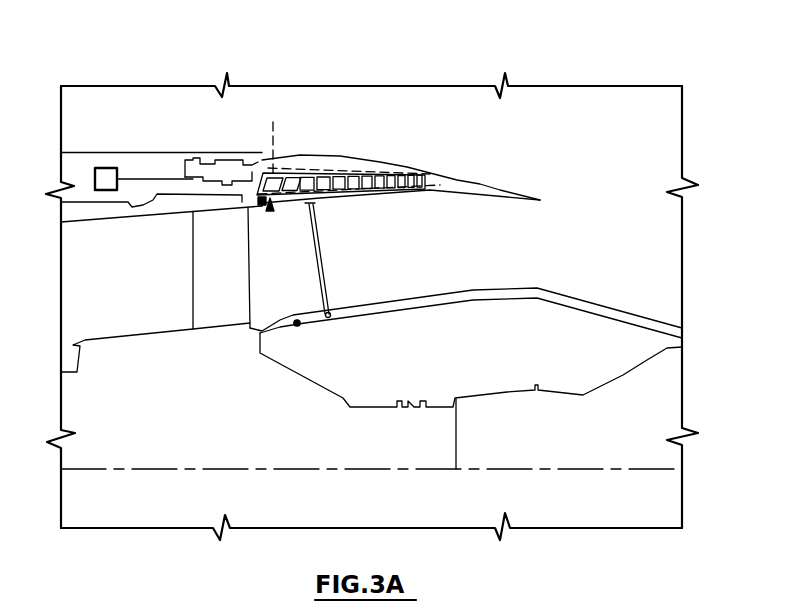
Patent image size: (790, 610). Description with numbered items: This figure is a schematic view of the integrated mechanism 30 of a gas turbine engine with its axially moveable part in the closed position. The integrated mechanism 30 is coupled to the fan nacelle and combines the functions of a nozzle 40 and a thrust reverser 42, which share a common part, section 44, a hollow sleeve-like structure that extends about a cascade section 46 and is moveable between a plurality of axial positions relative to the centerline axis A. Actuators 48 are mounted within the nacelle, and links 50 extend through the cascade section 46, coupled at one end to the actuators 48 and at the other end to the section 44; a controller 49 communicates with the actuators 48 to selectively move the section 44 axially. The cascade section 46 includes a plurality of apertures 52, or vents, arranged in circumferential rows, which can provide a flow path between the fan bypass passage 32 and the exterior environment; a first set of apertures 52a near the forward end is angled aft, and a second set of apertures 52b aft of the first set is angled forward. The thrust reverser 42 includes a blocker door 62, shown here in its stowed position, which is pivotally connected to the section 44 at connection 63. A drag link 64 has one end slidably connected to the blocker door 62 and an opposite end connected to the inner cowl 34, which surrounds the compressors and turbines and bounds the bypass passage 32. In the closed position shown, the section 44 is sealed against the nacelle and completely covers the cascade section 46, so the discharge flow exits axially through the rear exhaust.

The integrated mechanism 30 is at (291, 96).
The fan bypass passage 32 is at (177, 315).
The inner cowl 34 is at (467, 292).
The nozzle 40 is at (371, 141).
The thrust reverser 42 is at (352, 221).
The section 44 is at (317, 158).
The cascade section 46 is at (262, 213).
The actuator 48 is at (200, 158).
The controller 49 is at (109, 168).
The link 50 is at (273, 122).
The aperture 52 is at (303, 213).
The first set of apertures 52a is at (256, 163).
The second set of apertures 52b is at (396, 162).
The blocker door 62 is at (365, 193).
The connection 63 is at (258, 205).
The drag link 64 is at (322, 285).
The centerline axis A is at (507, 468).